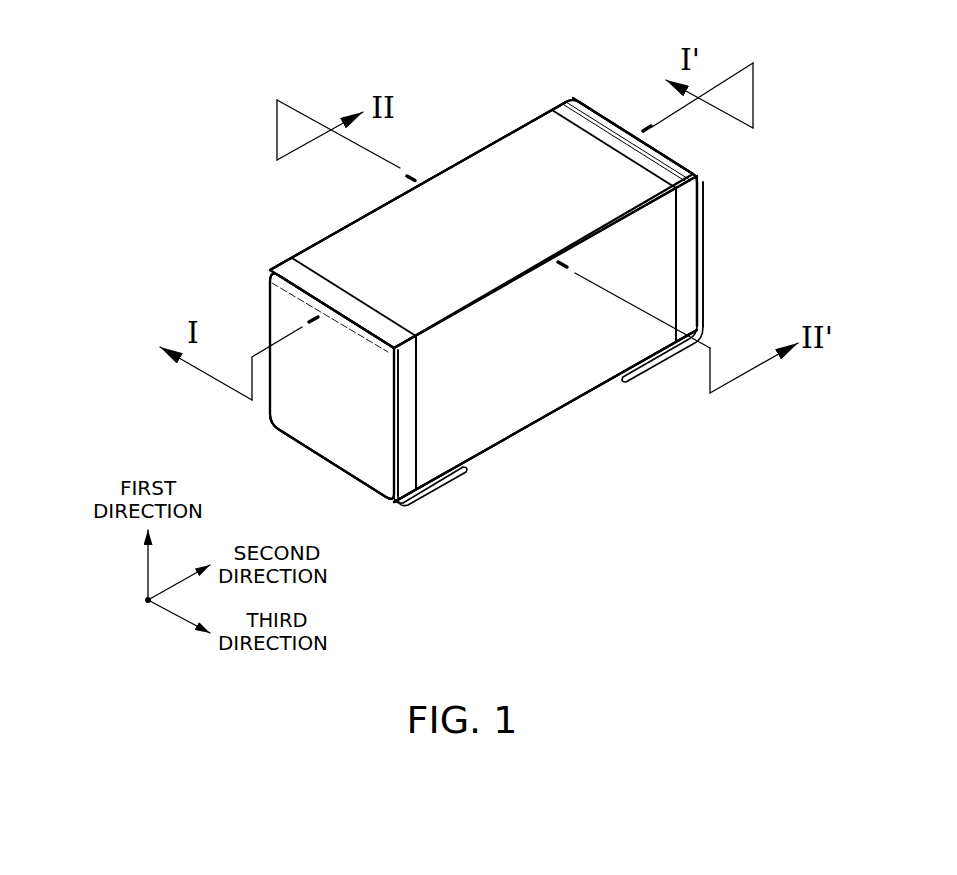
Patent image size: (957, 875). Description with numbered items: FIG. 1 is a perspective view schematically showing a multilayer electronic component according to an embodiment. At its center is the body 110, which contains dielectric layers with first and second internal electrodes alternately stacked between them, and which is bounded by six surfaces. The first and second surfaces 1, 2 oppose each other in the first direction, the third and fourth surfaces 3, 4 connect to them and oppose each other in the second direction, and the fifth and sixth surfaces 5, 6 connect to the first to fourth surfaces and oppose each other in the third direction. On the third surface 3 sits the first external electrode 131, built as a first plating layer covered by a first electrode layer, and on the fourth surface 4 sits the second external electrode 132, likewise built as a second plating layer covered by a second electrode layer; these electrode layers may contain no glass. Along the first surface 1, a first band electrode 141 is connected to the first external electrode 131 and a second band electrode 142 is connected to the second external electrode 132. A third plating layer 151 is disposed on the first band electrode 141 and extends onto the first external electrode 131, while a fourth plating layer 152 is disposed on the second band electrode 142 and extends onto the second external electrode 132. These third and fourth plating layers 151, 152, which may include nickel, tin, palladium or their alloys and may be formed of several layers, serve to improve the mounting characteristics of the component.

The first surface 1 is at (522, 390).
The second surface 2 is at (503, 188).
The third surface 3 is at (333, 432).
The fourth surface 4 is at (581, 163).
The fifth surface 5 is at (398, 242).
The sixth surface 6 is at (560, 352).
The body 110 is at (455, 194).
The first external electrode 131 is at (293, 270).
The second external electrode 132 is at (560, 108).
The first band electrode 141 is at (448, 480).
The second band electrode 142 is at (665, 362).
The third plating layer 151 is at (274, 298).
The fourth plating layer 152 is at (585, 108).